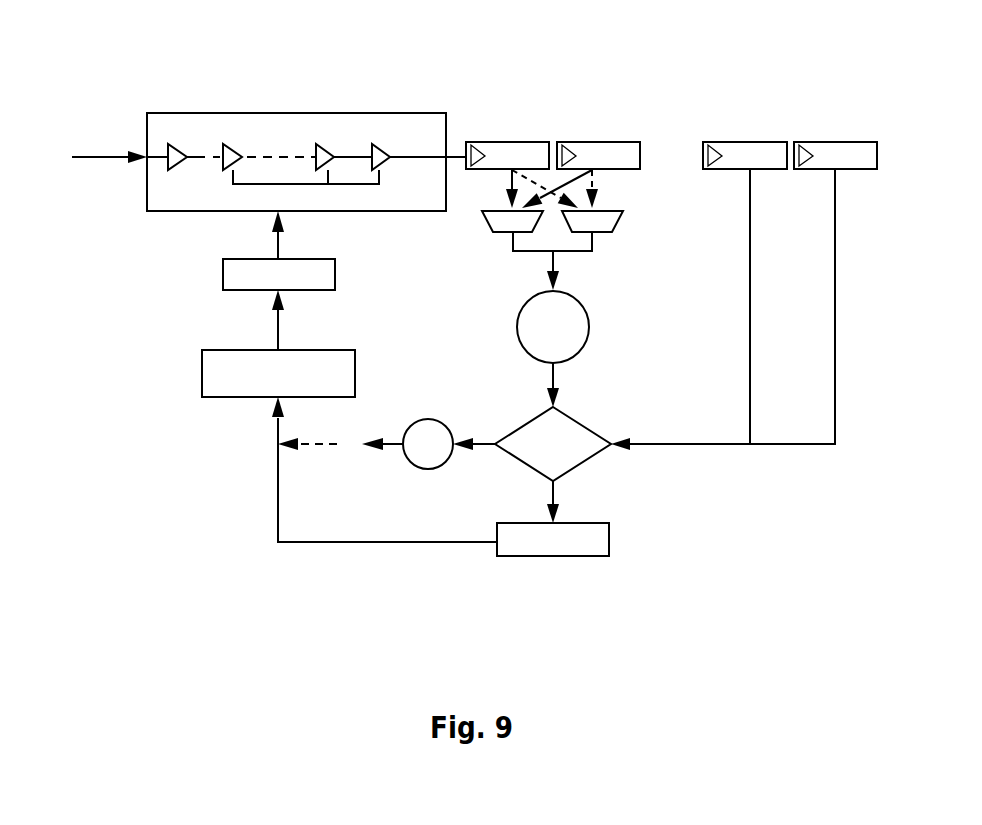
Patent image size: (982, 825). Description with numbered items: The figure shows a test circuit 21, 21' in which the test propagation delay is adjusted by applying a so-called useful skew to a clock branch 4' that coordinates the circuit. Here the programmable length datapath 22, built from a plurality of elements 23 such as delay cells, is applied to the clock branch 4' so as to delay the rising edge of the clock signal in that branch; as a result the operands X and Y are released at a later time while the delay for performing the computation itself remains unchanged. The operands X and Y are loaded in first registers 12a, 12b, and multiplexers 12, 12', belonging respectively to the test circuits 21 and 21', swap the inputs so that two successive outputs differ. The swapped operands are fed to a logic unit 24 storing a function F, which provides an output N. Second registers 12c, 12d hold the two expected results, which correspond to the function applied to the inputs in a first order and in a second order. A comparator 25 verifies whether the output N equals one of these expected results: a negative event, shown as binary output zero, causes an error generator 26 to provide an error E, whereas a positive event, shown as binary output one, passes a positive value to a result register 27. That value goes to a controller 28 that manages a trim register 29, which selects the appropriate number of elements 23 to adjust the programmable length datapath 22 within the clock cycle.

The clock branch 4' is at (96, 118).
The programmable length datapath 22 is at (175, 113).
The elements 23 is at (242, 152).
The first register 12a is at (520, 142).
The first register 12b is at (605, 142).
The second register 12c is at (753, 142).
The second register 12d is at (838, 142).
The multiplexer 12 is at (512, 218).
The multiplexer 12' is at (592, 201).
The logic unit 24 is at (592, 315).
The comparator 25 is at (580, 420).
The error generator 26 is at (422, 419).
The result register 27 is at (552, 556).
The controller 28 is at (240, 397).
The trim register 29 is at (222, 278).
The test circuit 21 is at (461, 343).
The test circuit 21' is at (741, 585).